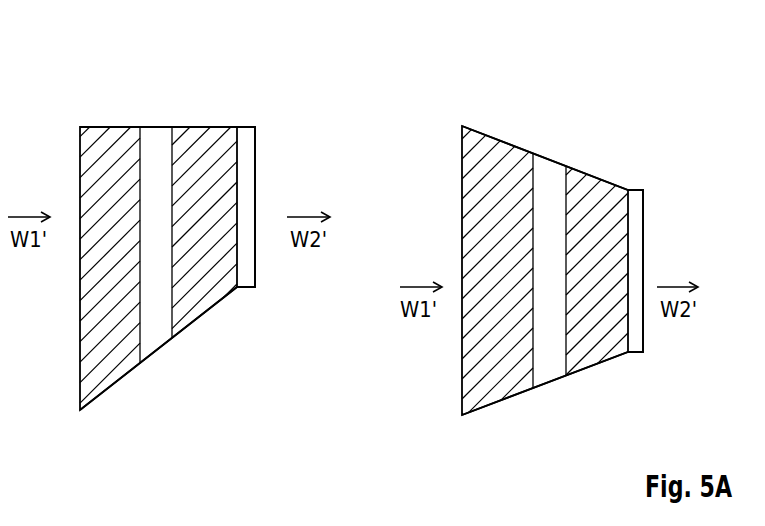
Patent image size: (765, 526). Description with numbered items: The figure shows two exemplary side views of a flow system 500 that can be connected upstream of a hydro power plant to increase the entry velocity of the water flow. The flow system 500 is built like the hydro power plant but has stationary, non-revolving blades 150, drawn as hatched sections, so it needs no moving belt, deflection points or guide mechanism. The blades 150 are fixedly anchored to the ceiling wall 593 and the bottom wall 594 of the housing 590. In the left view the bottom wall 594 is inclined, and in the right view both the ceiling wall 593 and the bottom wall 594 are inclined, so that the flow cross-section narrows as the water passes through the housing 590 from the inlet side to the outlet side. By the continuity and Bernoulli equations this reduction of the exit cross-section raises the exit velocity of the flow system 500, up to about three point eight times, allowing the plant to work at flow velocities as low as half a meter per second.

The flow system 500 is at (168, 83).
The blades 150 is at (227, 165).
The housing 590 is at (228, 103).
The ceiling wall 593 is at (117, 127).
The bottom wall 594 is at (125, 374).